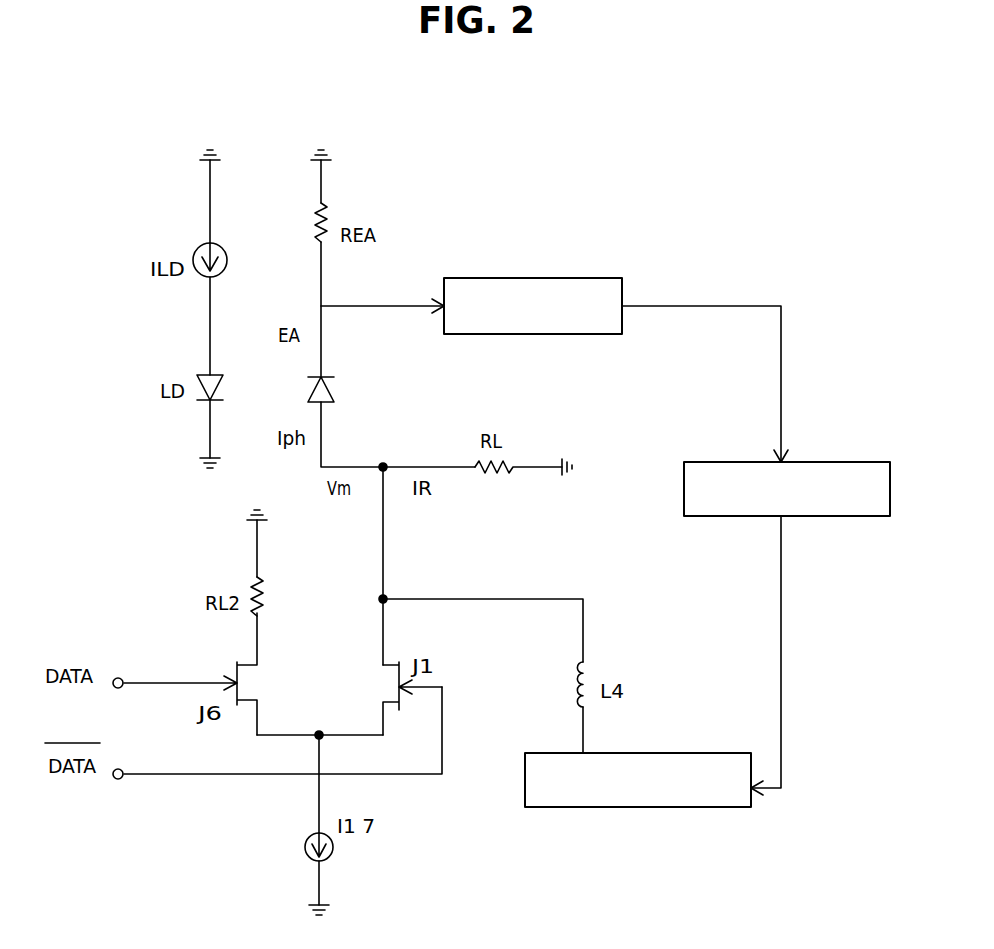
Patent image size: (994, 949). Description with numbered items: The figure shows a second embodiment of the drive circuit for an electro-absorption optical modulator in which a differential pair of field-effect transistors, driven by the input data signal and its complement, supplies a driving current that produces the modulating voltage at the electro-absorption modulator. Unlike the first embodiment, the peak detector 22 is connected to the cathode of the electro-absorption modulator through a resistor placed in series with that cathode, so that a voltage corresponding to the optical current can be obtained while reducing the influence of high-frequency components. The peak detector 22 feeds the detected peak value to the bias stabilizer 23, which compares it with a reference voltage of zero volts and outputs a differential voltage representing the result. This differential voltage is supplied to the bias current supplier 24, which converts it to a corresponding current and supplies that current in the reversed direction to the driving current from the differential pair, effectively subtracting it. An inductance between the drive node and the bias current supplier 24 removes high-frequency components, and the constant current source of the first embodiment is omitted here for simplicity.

The peak detector 22 is at (553, 278).
The bias stabilizer 23 is at (854, 462).
The bias current supplier 24 is at (648, 808).